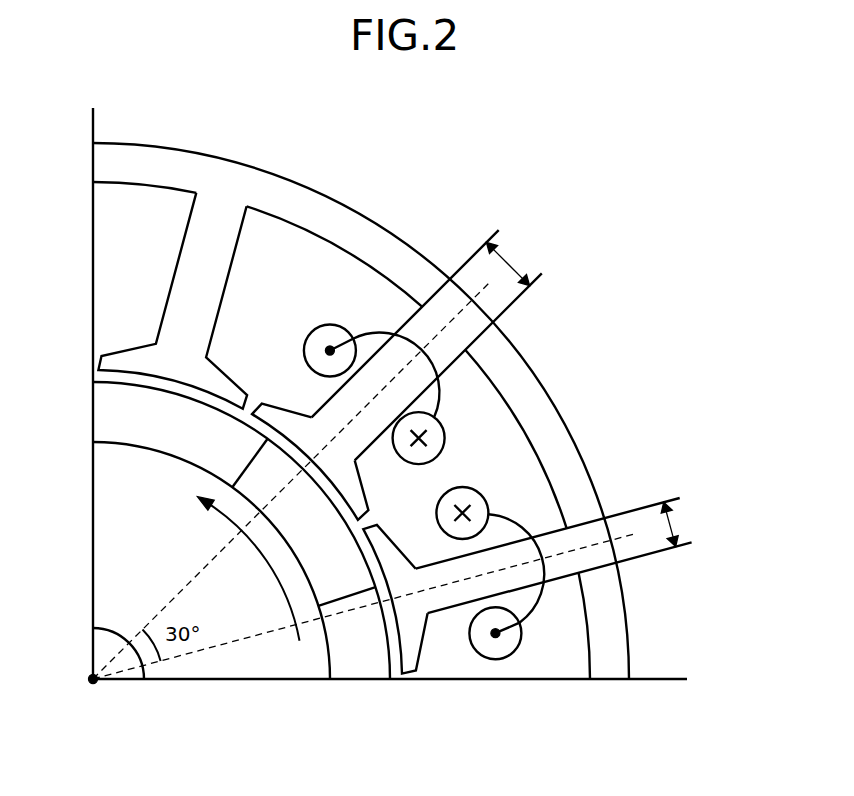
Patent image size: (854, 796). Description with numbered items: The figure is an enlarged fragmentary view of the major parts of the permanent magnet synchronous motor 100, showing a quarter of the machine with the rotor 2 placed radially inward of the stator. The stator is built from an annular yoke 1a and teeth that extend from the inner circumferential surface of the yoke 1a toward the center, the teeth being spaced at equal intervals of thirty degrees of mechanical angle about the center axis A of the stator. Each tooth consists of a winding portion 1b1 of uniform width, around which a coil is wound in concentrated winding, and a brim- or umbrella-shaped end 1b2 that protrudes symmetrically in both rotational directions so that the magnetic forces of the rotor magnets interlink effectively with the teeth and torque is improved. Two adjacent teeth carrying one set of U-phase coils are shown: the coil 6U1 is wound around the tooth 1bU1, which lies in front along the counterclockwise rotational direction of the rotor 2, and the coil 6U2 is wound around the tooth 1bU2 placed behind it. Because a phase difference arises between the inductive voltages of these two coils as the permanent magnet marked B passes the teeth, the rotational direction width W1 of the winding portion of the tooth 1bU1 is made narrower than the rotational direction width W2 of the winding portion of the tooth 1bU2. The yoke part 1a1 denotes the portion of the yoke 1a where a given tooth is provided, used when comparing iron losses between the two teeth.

The permanent magnet synchronous motor 100 is at (423, 95).
The rotor 2 is at (115, 548).
The yoke 1a is at (557, 410).
The yoke part 1a1 is at (483, 317).
The winding portion 1b1 is at (423, 325).
The end 1b2 is at (312, 413).
The tooth 1bU1 is at (698, 606).
The tooth 1bU2 is at (451, 110).
The coil 6U1 is at (517, 520).
The coil 6U2 is at (433, 414).
The rotational direction width W1 is at (689, 524).
The rotational direction width W2 is at (515, 260).
The center axis A is at (93, 681).
The permanent magnet B is at (354, 667).